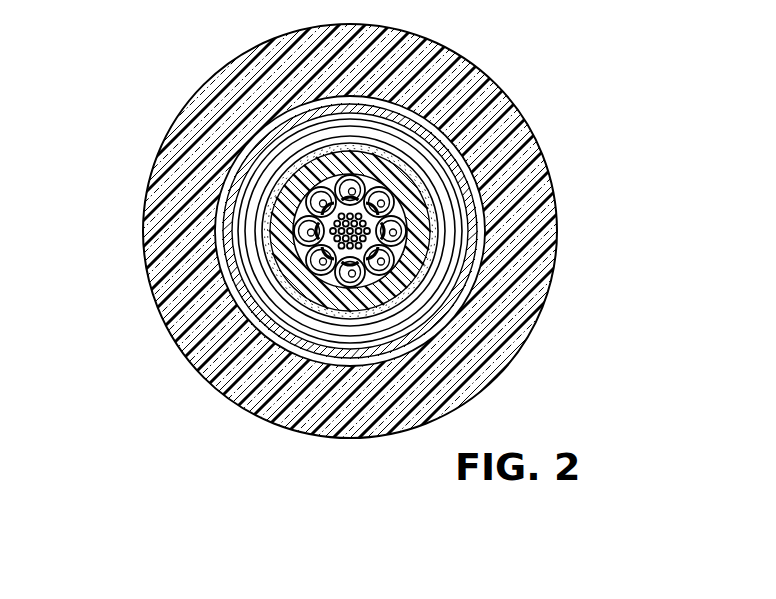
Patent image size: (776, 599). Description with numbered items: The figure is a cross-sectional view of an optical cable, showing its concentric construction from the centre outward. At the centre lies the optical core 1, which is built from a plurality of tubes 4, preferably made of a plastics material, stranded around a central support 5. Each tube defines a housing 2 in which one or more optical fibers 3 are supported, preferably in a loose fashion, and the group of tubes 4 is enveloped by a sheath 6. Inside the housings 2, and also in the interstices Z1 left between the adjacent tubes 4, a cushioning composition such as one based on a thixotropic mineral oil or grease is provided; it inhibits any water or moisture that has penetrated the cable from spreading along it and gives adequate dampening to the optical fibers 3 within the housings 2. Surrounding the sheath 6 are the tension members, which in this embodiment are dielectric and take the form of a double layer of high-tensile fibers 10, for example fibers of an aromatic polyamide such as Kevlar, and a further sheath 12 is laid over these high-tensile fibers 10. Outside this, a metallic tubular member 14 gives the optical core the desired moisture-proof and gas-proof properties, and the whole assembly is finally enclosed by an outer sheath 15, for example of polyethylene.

The optical core 1 is at (417, 231).
The housings 2 is at (388, 205).
The optical fibers 3 is at (400, 197).
The tubes 4 is at (383, 168).
The central support 5 is at (441, 226).
The sheath 6 is at (412, 258).
The high-tensile fibers 10 is at (368, 290).
The further sheath 12 is at (358, 302).
The metallic tubular member 14 is at (408, 308).
The outer sheath 15 is at (216, 87).
The interstices Z1 is at (305, 213).